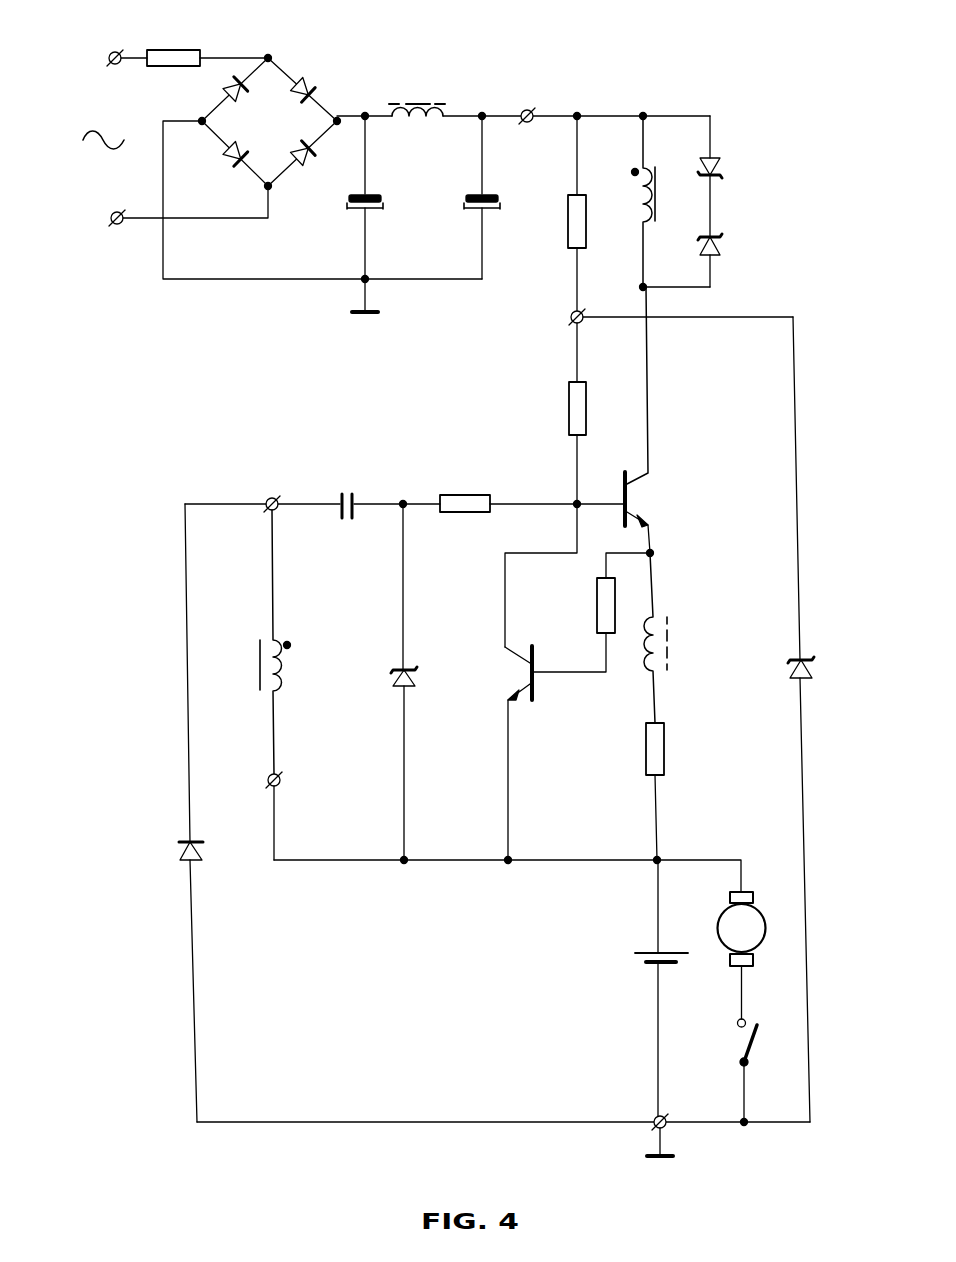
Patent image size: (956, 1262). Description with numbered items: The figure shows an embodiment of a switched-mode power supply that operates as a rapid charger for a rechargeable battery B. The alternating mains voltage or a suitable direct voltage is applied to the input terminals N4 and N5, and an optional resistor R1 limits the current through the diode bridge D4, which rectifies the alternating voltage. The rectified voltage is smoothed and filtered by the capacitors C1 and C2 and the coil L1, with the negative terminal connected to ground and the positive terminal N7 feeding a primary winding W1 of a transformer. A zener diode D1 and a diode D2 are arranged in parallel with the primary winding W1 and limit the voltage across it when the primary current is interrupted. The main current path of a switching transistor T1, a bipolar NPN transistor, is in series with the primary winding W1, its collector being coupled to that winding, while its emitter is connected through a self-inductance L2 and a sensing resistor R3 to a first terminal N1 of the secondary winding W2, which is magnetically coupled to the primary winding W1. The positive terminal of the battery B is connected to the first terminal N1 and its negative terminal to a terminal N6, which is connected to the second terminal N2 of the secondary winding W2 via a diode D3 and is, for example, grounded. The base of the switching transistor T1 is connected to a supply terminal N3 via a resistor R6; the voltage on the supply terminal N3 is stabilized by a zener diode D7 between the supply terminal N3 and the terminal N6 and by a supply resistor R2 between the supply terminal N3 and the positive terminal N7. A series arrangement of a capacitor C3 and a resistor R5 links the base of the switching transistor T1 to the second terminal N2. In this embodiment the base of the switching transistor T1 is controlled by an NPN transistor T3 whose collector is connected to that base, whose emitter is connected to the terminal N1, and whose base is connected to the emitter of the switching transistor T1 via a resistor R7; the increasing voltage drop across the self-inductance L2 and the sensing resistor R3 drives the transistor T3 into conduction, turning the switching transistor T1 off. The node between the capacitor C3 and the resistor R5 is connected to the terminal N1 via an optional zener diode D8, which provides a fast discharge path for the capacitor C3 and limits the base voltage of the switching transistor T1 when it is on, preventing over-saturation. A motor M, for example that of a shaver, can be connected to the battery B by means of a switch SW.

The input terminal N4 is at (117, 51).
The resistor R1 is at (176, 49).
The diode bridge D4 is at (282, 133).
The input terminal N5 is at (118, 226).
The capacitor C1 is at (378, 212).
The coil L1 is at (417, 104).
The positive terminal N7 is at (531, 101).
The capacitor C2 is at (477, 212).
The supply resistor R2 is at (568, 215).
The supply terminal N3 is at (571, 318).
The primary winding W1 is at (657, 200).
The zener diode D1 is at (722, 161).
The diode D2 is at (722, 247).
The resistor R6 is at (569, 412).
The second terminal N2 is at (272, 498).
The capacitor C3 is at (347, 492).
The resistor R5 is at (462, 494).
The switching transistor T1 is at (642, 498).
The resistor R7 is at (597, 608).
The transistor T3 is at (528, 670).
The self-inductance L2 is at (667, 650).
The sensing resistor R3 is at (666, 752).
The secondary winding W2 is at (259, 666).
The first terminal N1 is at (268, 780).
The zener diode D8 is at (393, 686).
The diode D3 is at (180, 856).
The zener diode D7 is at (790, 674).
The motor M is at (754, 896).
The rechargeable battery B is at (645, 956).
The switch SW is at (744, 1040).
The terminal N6 is at (657, 1114).